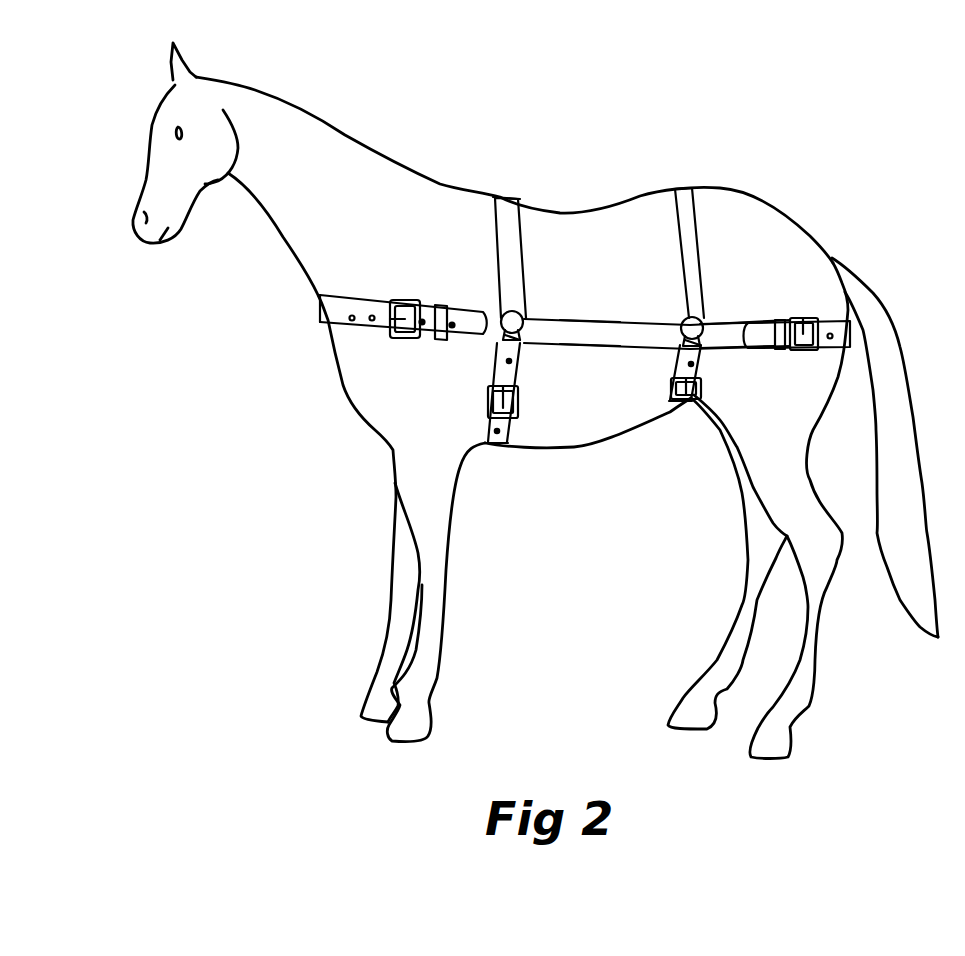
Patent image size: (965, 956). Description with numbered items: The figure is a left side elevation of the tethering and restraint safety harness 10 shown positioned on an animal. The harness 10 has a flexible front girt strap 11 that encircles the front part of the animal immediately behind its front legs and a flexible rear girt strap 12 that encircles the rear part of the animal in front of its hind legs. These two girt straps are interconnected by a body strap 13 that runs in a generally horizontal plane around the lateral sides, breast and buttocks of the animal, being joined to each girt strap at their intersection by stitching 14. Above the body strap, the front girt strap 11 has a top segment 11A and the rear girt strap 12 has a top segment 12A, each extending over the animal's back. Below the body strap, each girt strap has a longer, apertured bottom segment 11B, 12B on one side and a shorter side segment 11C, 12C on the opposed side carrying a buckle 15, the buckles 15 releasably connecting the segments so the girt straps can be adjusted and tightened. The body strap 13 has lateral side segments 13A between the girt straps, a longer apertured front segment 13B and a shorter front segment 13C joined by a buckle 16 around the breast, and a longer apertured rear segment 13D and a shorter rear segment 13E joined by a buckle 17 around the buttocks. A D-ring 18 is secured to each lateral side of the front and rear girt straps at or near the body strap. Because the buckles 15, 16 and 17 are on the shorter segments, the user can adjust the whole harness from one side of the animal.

The tethering and restraint safety harness 10 is at (529, 195).
The front girt strap 11 is at (481, 231).
The top segment of front girt strap 11A is at (503, 208).
The longer bottom segment of front girt strap 11B is at (488, 446).
The shorter side segment of front girt strap 11C is at (487, 418).
The rear girt strap 12 is at (713, 227).
The top segment of rear girt strap 12A is at (685, 200).
The longer bottom segment of rear girt strap 12B is at (682, 410).
The shorter side segment of rear girt strap 12C is at (666, 414).
The body strap 13 is at (741, 330).
The lateral side segment of body strap 13A is at (563, 320).
The longer front segment of body strap 13B is at (320, 308).
The shorter front segment of body strap 13C is at (360, 298).
The longer rear segment of body strap 13D is at (843, 332).
The shorter rear segment of body strap 13E is at (718, 320).
The stitching 14 is at (521, 334).
The buckle 15 is at (485, 406).
The buckle 16 is at (404, 300).
The buckle 17 is at (806, 352).
The D-ring 18 is at (514, 312).